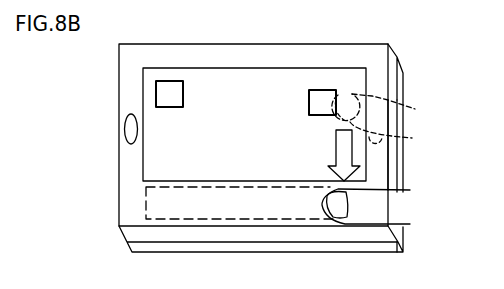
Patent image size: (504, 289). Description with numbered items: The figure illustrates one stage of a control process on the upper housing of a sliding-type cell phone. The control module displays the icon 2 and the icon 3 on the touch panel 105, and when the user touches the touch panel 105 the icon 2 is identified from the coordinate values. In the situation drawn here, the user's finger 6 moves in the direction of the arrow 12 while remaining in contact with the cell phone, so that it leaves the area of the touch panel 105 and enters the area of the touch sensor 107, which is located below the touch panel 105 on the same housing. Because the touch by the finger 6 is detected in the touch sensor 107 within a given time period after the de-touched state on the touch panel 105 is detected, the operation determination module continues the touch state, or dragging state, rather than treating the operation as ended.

The icon 2 is at (326, 90).
The icon 3 is at (157, 86).
The user's finger 6 is at (402, 204).
The arrow 12 is at (398, 165).
The touch panel 105 is at (135, 151).
The touch sensor 107 is at (157, 204).